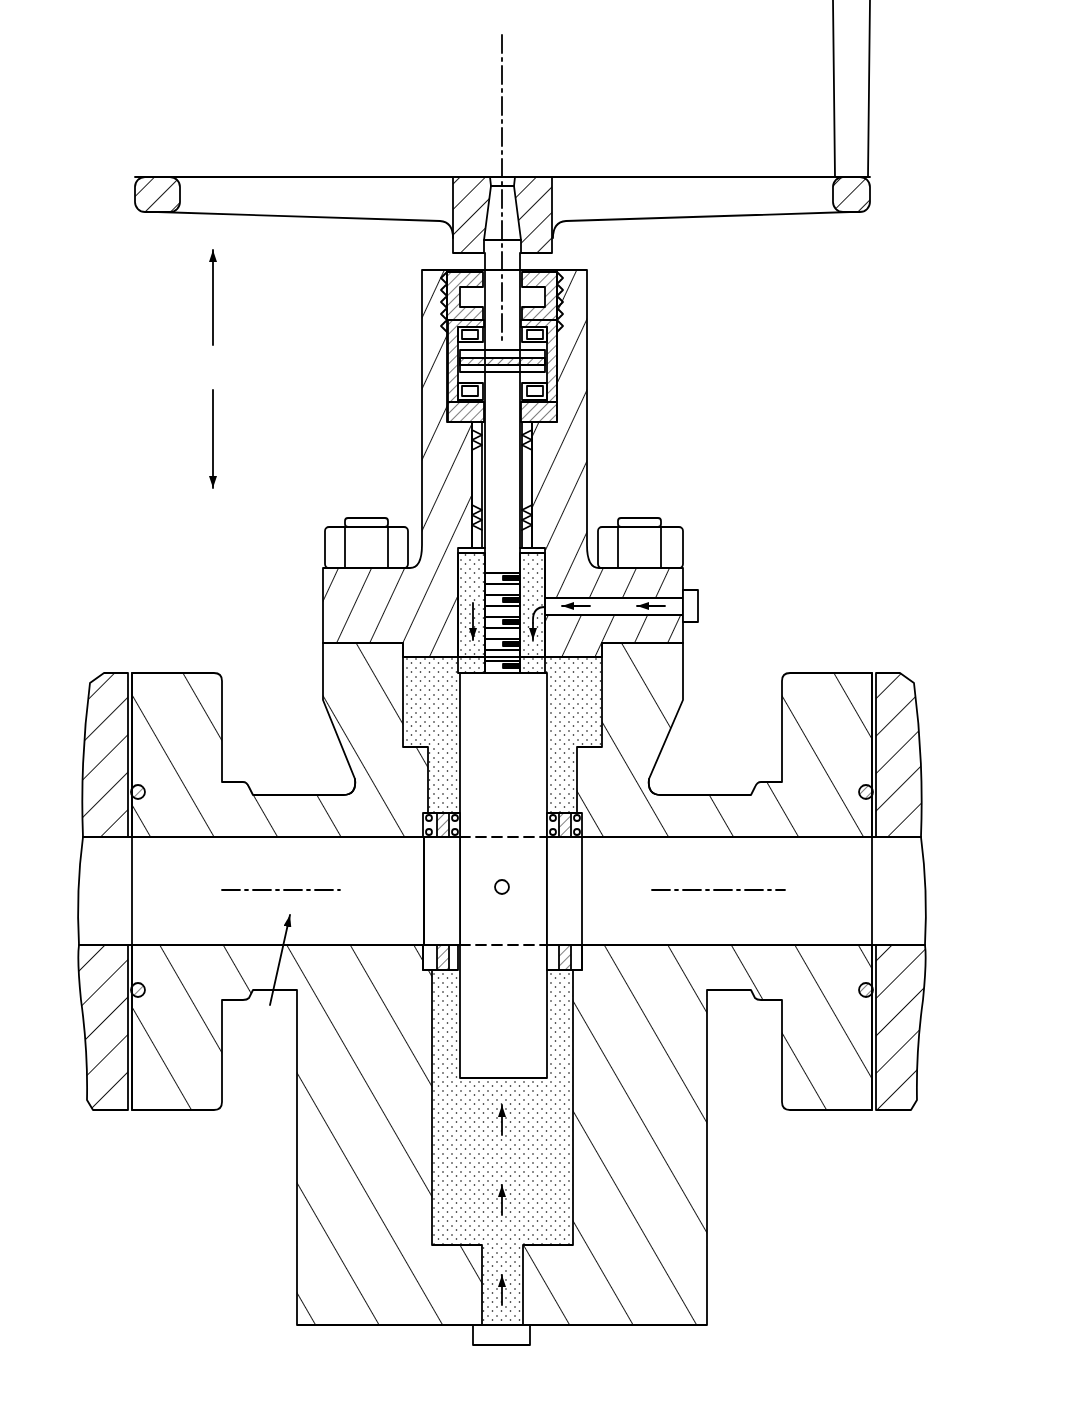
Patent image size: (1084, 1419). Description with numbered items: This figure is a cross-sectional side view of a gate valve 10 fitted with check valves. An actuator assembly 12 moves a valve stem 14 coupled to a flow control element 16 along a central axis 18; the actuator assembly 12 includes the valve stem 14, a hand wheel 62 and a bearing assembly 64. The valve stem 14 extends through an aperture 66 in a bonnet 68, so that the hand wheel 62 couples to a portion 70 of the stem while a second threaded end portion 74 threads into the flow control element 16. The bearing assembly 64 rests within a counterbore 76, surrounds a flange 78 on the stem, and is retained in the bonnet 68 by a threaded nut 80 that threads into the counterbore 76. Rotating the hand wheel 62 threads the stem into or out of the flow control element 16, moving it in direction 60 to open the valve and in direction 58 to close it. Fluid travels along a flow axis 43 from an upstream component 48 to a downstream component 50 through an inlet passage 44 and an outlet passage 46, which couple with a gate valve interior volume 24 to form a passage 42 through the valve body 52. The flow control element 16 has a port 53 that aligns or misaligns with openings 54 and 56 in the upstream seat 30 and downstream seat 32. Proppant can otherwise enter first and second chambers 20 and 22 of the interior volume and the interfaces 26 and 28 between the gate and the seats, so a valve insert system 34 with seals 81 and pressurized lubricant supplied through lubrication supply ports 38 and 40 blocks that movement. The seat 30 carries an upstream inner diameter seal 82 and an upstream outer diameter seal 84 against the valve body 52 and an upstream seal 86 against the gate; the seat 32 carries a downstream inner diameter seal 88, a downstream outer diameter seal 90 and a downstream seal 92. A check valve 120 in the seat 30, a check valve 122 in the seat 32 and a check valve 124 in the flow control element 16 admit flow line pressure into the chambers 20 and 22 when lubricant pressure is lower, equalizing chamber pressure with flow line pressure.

The gate valve 10 is at (840, 345).
The actuator assembly 12 is at (378, 150).
The valve stem 14 is at (497, 482).
The flow control element 16 is at (488, 706).
The central axis 18 is at (504, 74).
The first chamber 20 is at (470, 570).
The second chamber 22 is at (525, 1136).
The gate valve interior volume 24 is at (465, 655).
The interface 26 is at (457, 822).
The interface 28 is at (549, 822).
The upstream seat 30 is at (450, 962).
The downstream seat 32 is at (575, 968).
The valve insert system 34 is at (788, 628).
The lubrication supply port 38 is at (699, 606).
The lubrication supply port 40 is at (478, 1333).
The passage 42 is at (267, 975).
The flow axis 43 is at (720, 895).
The inlet passage 44 is at (158, 907).
The outlet passage 46 is at (814, 907).
The upstream component 48 is at (117, 680).
The downstream component 50 is at (903, 690).
The valve body 52 is at (700, 1272).
The port 53 is at (488, 929).
The opening 54 is at (445, 900).
The opening 56 is at (568, 913).
The direction 58 is at (210, 432).
The direction 60 is at (210, 300).
The hand wheel 62 is at (736, 184).
The bearing assembly 64 is at (410, 314).
The aperture 66 is at (535, 431).
The bonnet 68 is at (448, 408).
The portion 70 is at (497, 184).
The second threaded end portion 74 is at (500, 655).
The counterbore 76 is at (463, 360).
The flange 78 is at (547, 361).
The threaded nut 80 is at (552, 305).
The seals 81 is at (412, 846).
The upstream inner diameter seal 82 is at (445, 950).
The upstream outer diameter seal 84 is at (428, 820).
The upstream seal 86 is at (440, 948).
The downstream inner diameter seal 88 is at (583, 952).
The downstream outer diameter seal 90 is at (580, 960).
The downstream seal 92 is at (547, 838).
The check valve 120 is at (422, 806).
The check valve 122 is at (580, 806).
The check valve 124 is at (509, 885).